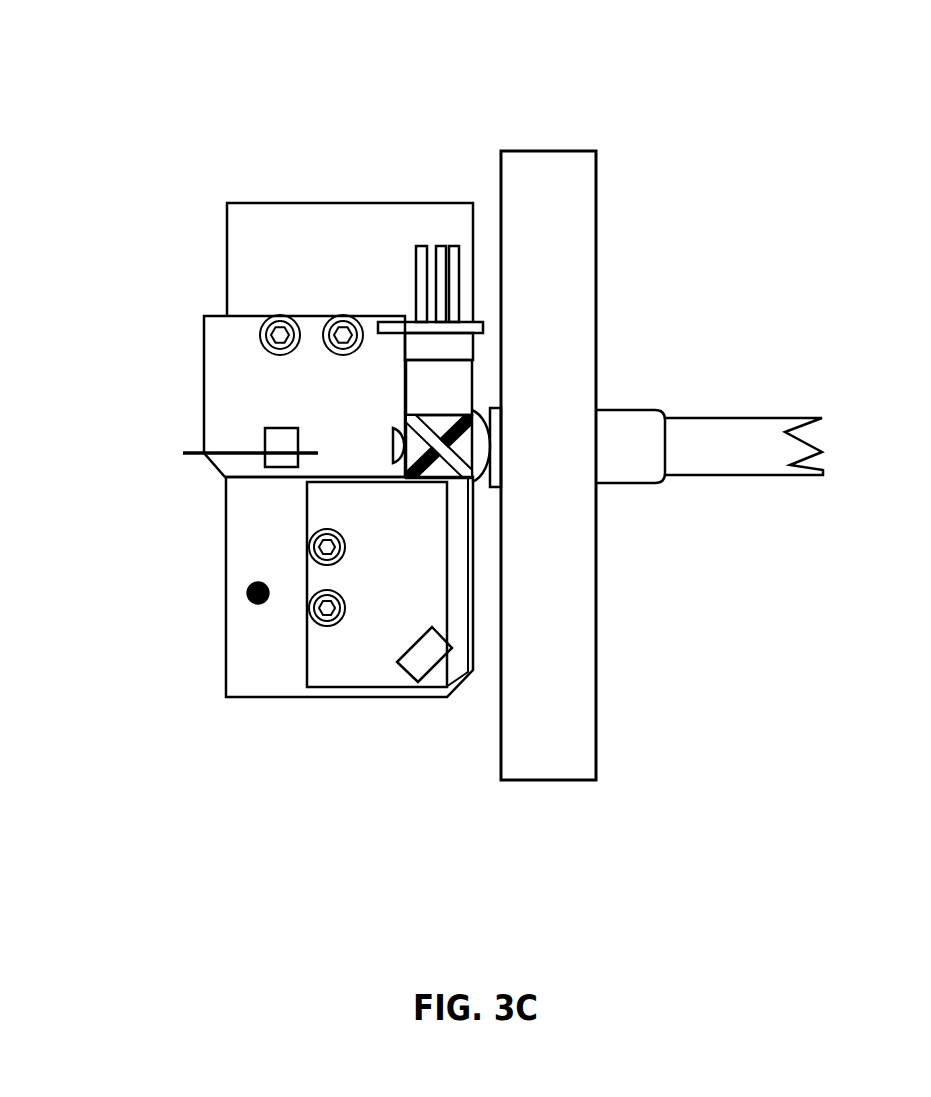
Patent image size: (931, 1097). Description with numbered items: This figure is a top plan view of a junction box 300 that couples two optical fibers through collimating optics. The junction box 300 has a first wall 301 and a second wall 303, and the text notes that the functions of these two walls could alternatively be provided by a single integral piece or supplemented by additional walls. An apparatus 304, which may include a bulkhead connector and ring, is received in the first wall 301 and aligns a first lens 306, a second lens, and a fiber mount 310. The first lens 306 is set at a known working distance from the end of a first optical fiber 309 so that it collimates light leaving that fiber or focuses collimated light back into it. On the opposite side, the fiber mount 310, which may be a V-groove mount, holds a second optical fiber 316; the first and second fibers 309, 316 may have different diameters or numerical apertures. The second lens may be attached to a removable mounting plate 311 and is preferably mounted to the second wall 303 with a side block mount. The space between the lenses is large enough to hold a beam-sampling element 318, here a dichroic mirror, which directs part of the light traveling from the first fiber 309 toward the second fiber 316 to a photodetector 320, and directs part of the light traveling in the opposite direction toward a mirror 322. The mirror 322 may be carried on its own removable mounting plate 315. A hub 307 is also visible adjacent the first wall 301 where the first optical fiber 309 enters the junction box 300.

The junction box 300 is at (783, 72).
The first wall 301 is at (597, 258).
The second wall 303 is at (270, 204).
The apparatus 304 is at (113, 123).
The first lens 306 is at (390, 453).
The hub 307 is at (630, 485).
The first optical fiber 309 is at (728, 415).
The fiber mount 310 is at (273, 430).
The removable mounting plate 311 is at (205, 397).
The removable mounting plate 315 is at (307, 662).
The second optical fiber 316 is at (187, 457).
The beam-sampling element 318 is at (443, 453).
The photodetector 320 is at (427, 342).
The mirror 322 is at (403, 660).